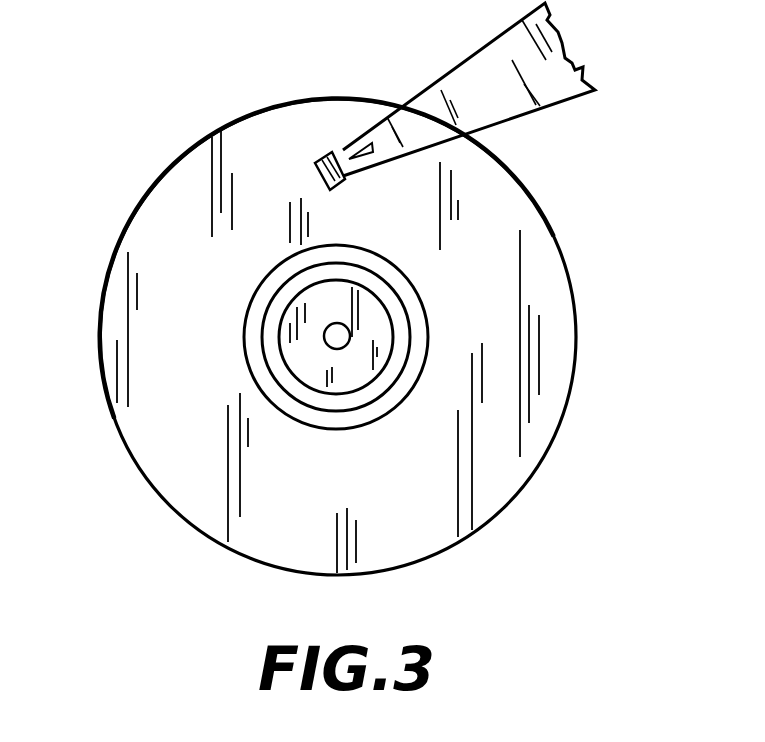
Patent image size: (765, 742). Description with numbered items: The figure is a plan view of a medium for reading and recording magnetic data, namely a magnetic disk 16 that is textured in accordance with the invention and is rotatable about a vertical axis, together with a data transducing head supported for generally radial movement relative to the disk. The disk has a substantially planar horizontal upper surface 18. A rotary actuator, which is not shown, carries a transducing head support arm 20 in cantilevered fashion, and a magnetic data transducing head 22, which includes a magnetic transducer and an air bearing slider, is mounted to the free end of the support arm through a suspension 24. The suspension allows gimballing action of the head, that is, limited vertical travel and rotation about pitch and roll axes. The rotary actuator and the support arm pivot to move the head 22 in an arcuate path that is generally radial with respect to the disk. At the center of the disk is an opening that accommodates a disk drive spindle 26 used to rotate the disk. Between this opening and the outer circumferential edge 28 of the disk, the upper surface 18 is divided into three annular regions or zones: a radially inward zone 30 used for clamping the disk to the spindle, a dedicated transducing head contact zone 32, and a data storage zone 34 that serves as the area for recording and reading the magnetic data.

The magnetic disk 16 is at (168, 198).
The upper surface 18 is at (218, 282).
The transducing head support arm 20 is at (558, 103).
The magnetic data transducing head 22 is at (342, 182).
The suspension 24 is at (355, 148).
The disk drive spindle 26 is at (336, 350).
The outer circumferential edge 28 is at (533, 477).
The radially inward zone 30 is at (373, 315).
The transducing head contact zone 32 is at (255, 345).
The data storage zone 34 is at (558, 347).